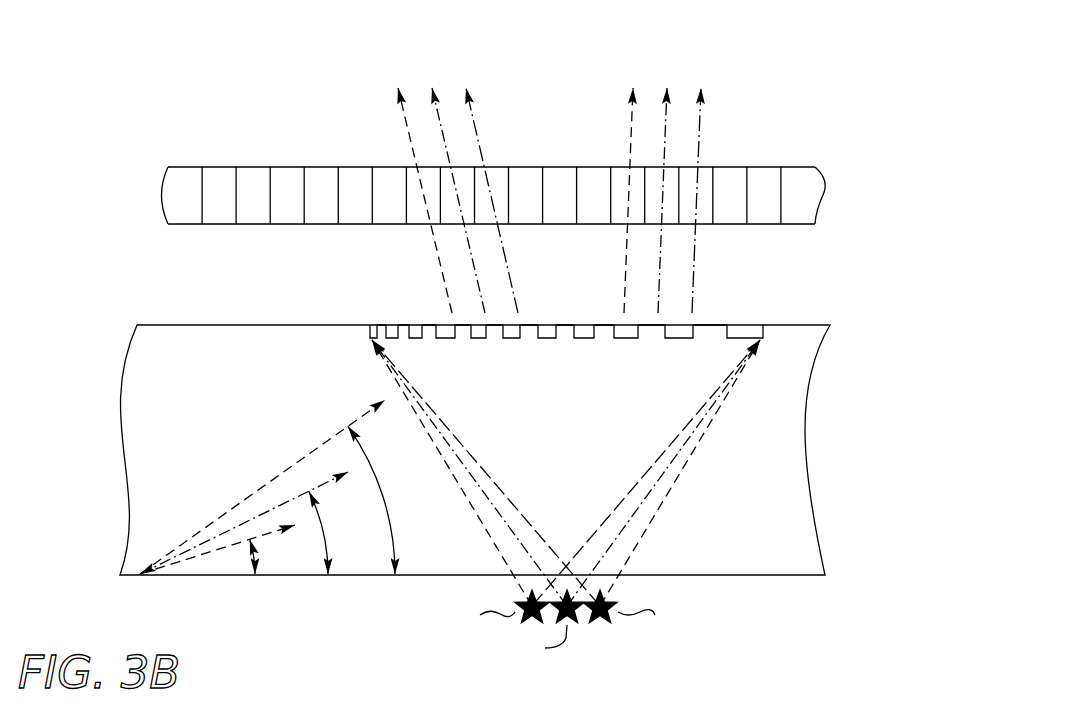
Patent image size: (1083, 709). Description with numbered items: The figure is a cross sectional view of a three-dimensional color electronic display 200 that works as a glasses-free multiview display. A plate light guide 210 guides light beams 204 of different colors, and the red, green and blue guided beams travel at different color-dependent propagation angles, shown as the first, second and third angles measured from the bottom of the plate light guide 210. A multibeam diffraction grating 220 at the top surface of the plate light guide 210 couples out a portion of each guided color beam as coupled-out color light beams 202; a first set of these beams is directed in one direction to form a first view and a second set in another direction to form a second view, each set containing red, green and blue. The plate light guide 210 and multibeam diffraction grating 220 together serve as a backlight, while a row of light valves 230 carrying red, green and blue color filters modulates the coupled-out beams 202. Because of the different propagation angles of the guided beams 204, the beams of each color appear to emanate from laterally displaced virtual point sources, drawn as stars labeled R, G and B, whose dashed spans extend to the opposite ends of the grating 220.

The 3D color electronic display 200 is at (817, 32).
The color light beams 202 is at (420, 88).
The guided light beams 204 is at (333, 433).
The plate light guide 210 is at (812, 448).
The multibeam diffraction grating 220 is at (398, 303).
The light valves 230 is at (822, 195).